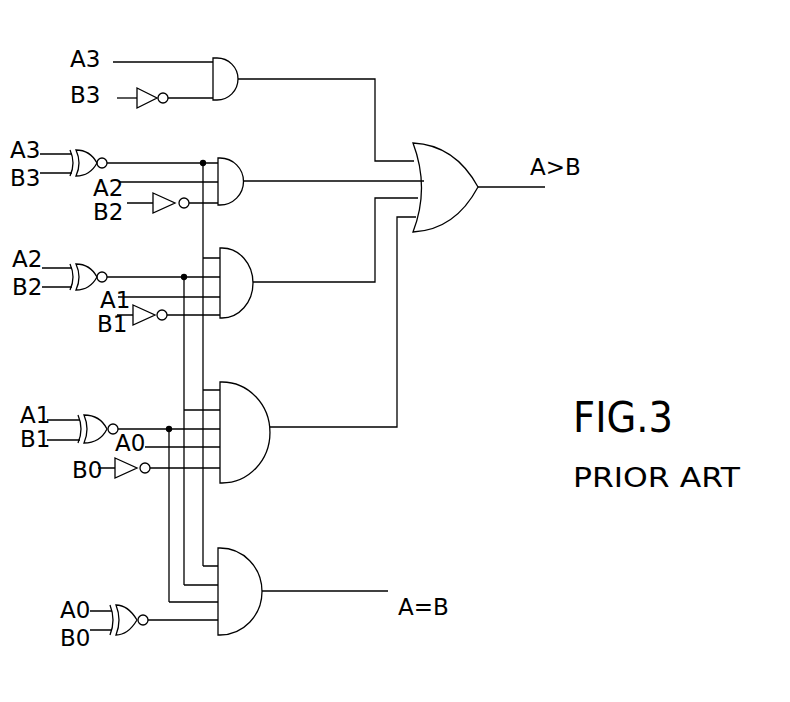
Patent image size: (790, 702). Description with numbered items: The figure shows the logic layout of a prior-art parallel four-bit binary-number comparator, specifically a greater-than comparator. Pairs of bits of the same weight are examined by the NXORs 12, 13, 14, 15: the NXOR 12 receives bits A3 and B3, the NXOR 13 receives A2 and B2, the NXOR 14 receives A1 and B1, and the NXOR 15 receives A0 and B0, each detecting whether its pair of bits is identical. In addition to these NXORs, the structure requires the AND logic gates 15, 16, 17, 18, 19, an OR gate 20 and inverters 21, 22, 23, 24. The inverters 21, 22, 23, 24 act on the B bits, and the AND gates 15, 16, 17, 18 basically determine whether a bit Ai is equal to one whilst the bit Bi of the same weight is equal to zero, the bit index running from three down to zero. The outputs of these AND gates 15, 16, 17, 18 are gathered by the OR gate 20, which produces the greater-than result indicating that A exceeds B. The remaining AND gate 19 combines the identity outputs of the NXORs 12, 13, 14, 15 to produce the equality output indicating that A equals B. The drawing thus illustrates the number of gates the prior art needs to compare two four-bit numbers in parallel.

The NXOR 12 is at (82, 151).
The NXOR 13 is at (78, 265).
The NXOR 14 is at (92, 416).
The NXOR / AND logic gate 15 is at (228, 56).
The AND logic gate 16 is at (228, 158).
The AND logic gate 17 is at (245, 242).
The AND logic gate 18 is at (236, 382).
The AND logic gate 19 is at (238, 548).
The OR gate 20 is at (465, 160).
The inverter 21 is at (145, 108).
The inverter 22 is at (170, 213).
The inverter 23 is at (150, 325).
The inverter 24 is at (133, 478).